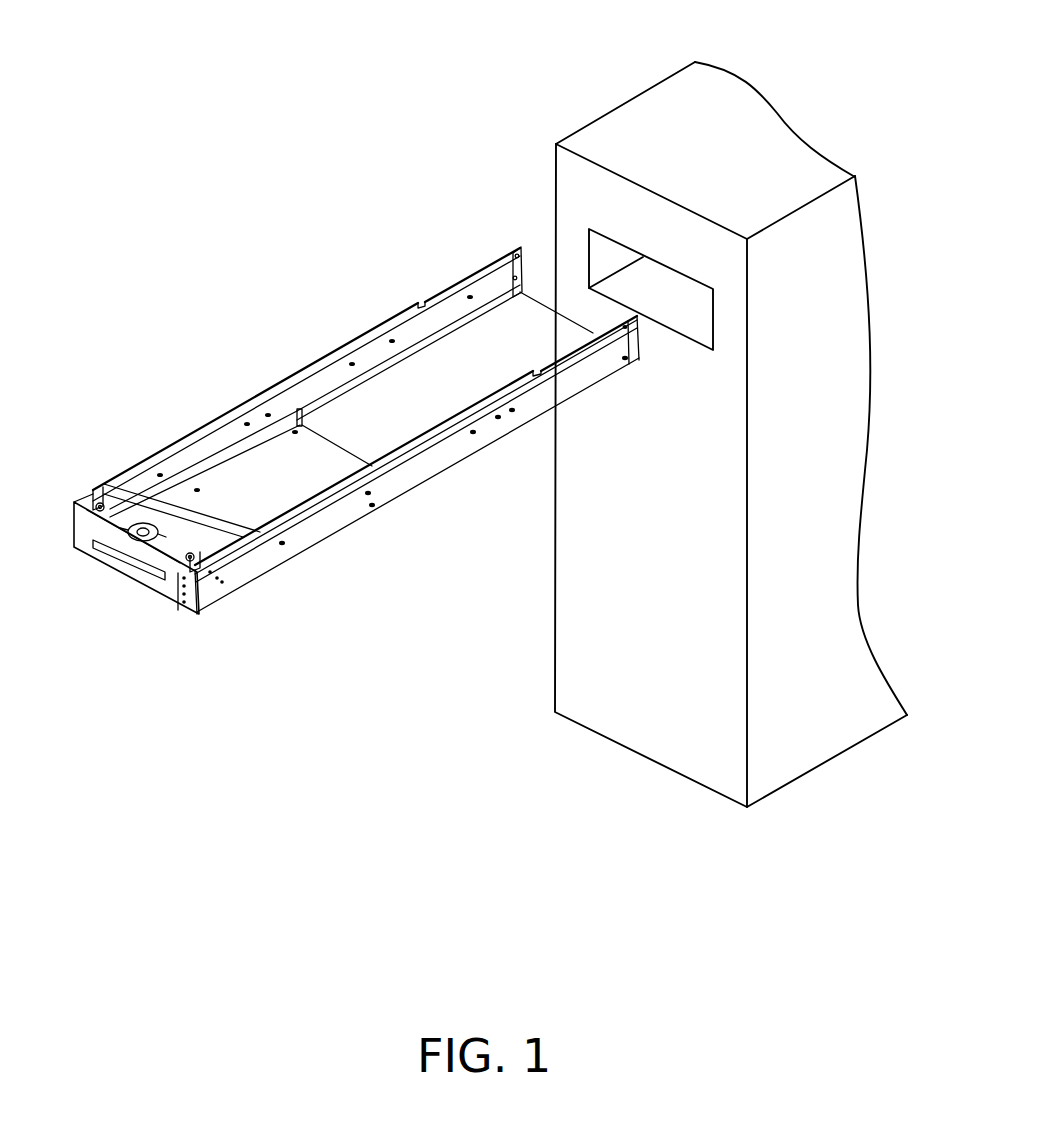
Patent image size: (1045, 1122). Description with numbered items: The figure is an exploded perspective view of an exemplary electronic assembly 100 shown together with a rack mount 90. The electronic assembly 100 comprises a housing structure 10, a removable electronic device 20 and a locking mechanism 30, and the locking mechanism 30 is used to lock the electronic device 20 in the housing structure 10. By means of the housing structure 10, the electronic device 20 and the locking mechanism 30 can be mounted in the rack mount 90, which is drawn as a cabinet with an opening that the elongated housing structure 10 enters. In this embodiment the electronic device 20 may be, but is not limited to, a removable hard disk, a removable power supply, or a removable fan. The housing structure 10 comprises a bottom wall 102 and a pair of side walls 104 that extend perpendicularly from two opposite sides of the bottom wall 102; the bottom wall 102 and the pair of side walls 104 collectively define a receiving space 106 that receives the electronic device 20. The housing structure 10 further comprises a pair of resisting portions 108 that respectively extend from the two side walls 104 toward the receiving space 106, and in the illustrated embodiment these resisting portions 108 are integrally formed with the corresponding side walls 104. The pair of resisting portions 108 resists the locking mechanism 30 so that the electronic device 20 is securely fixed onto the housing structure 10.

The rack mount 90 is at (637, 132).
The electronic assembly 100 is at (198, 606).
The housing structure 10 is at (237, 580).
The removable electronic device 20 is at (162, 572).
The locking mechanism 30 is at (150, 623).
The bottom wall 102 is at (530, 305).
The side walls 104 is at (487, 425).
The receiving space 106 is at (352, 427).
The resisting portions 108 is at (200, 560).